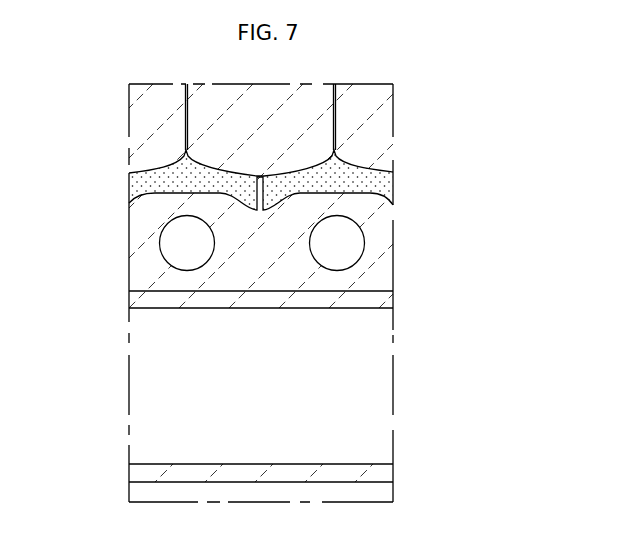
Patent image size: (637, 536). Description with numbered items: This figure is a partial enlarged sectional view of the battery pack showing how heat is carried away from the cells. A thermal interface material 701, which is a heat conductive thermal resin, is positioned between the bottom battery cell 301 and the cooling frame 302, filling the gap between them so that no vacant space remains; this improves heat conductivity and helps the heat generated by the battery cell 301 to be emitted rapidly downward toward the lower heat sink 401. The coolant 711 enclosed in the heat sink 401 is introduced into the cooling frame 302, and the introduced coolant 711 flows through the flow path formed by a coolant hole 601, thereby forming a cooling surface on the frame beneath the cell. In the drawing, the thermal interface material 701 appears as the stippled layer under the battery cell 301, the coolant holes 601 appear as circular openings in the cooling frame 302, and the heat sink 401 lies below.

The bottom battery cell 301 is at (377, 117).
The cooling frame 302 is at (377, 238).
The heat sink 401 is at (377, 301).
The coolant hole 601 is at (168, 261).
The thermal interface material 701 is at (377, 181).
The coolant 711 is at (377, 384).